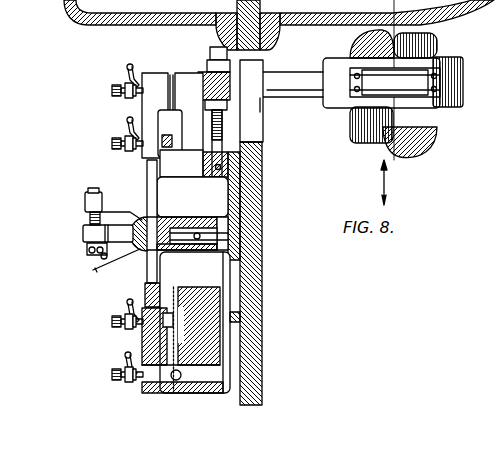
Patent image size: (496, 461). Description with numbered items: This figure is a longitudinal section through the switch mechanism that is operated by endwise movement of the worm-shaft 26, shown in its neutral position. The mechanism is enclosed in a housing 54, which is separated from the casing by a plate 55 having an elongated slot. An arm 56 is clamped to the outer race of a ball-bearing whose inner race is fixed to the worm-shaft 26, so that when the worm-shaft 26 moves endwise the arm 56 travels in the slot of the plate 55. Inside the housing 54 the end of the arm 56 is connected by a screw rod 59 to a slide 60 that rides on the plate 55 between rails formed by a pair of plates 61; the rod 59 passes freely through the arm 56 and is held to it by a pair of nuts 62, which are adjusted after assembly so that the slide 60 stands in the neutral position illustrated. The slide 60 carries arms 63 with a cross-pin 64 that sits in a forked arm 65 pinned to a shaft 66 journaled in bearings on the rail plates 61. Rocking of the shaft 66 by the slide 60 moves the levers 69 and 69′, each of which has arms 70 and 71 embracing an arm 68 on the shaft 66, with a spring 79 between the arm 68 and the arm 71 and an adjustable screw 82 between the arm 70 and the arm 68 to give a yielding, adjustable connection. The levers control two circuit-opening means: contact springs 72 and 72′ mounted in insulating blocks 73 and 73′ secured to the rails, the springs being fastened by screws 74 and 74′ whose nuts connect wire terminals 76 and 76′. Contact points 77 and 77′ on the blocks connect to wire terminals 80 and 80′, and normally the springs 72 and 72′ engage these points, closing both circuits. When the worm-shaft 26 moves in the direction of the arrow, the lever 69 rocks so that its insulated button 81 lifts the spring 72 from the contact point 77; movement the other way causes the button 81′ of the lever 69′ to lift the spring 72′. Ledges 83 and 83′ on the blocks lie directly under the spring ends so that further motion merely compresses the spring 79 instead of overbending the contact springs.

The worm-shaft 26 is at (395, 80).
The housing 54 is at (100, 20).
The plate 55 is at (261, 190).
The arm 56 is at (305, 82).
The screw rod 59 is at (222, 138).
The slide 60 is at (262, 160).
The rail plates 61 is at (246, 25).
The nuts 62 is at (242, 62).
The arms 63 is at (215, 248).
The cross-pin 64 is at (222, 223).
The forked arm 65 is at (183, 251).
The shaft 66 is at (175, 221).
The arm 68 is at (85, 236).
The lever 69 is at (152, 270).
The lever 69′ is at (152, 186).
The arm 70 is at (86, 205).
The arm 71 is at (95, 270).
The contact spring 72 is at (173, 343).
The contact spring 72′ is at (175, 76).
The block of insulating material 73 is at (182, 398).
The block of insulating material 73′ is at (155, 82).
The screw 74 is at (113, 376).
The screw 74′ is at (113, 92).
The wire terminal 76 is at (125, 357).
The wire terminal 76′ is at (127, 70).
The contact point 77 is at (172, 318).
The contact point 77′ is at (170, 145).
The spring 79 is at (92, 254).
The wire terminal 80 is at (127, 304).
The wire terminal 80′ is at (127, 122).
The insulated button 81 is at (162, 292).
The insulated button 81′ is at (168, 180).
The adjustable screw 82 is at (90, 222).
The ledge 83 is at (197, 335).
The ledge 83′ is at (194, 163).